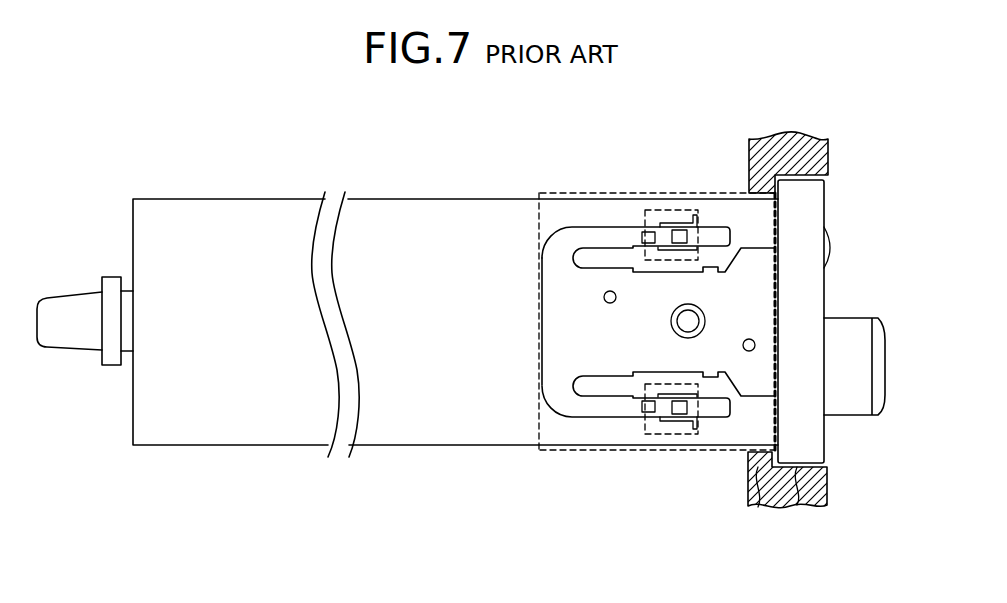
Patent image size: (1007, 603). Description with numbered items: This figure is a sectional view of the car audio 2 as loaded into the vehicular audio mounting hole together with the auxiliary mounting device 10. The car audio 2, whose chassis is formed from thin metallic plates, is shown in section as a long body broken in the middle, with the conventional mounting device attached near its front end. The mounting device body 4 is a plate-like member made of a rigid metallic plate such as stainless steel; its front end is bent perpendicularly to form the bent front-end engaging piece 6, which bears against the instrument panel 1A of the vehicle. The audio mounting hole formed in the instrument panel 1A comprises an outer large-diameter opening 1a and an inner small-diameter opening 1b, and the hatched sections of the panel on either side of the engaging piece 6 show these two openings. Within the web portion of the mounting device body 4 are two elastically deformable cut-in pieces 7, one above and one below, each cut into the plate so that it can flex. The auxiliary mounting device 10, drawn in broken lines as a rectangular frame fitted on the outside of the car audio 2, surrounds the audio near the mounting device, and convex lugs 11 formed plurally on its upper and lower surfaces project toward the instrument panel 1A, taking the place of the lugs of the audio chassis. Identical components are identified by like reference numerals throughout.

The instrument panel 1A is at (828, 148).
The outer large-diameter opening 1a is at (811, 504).
The inner small-diameter opening 1b is at (766, 507).
The car audio 2 is at (203, 199).
The mounting device body 4 is at (575, 336).
The bent front-end engaging piece 6 is at (778, 283).
The cut-in piece 7 is at (614, 236).
The auxiliary mounting device 10 is at (567, 190).
The convex lug 11 is at (745, 192).